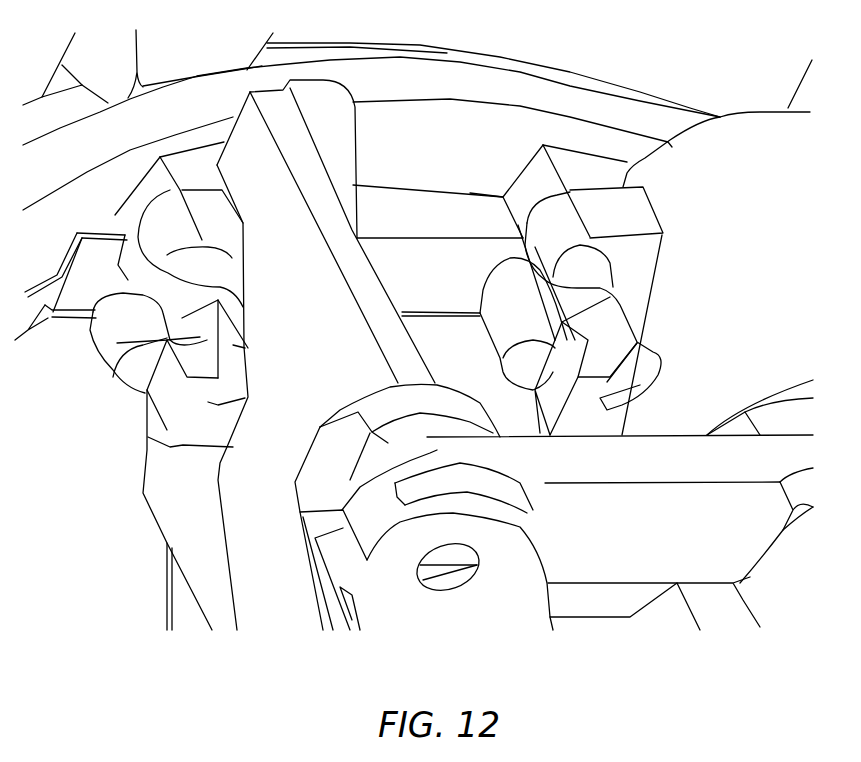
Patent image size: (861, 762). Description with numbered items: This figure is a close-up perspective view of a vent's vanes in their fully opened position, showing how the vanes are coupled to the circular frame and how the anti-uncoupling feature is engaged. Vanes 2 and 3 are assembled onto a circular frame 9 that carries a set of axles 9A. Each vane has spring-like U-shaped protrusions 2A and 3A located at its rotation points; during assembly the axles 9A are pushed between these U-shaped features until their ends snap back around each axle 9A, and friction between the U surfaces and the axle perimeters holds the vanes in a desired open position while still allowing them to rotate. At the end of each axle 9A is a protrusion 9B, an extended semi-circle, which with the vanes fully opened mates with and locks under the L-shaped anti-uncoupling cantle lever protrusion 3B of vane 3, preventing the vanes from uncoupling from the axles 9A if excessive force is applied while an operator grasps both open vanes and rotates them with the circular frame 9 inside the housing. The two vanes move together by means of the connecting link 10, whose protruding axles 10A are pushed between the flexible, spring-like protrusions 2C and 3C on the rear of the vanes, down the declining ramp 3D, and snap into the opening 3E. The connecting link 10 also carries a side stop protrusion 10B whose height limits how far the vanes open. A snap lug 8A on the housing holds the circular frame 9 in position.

The vane 2 is at (582, 141).
The protrusion 2A is at (532, 290).
The protrusion 2C is at (760, 481).
The vane 3 is at (289, 359).
The protrusion 3A is at (166, 267).
The protrusion 3B is at (182, 373).
The protrusion 3C is at (436, 507).
The declining ramp 3D is at (341, 521).
The opening 3E is at (443, 592).
The snap lug 8A is at (371, 120).
The circular frame 9 is at (386, 159).
The axle 9A is at (118, 227).
The protrusion 9B is at (245, 348).
The connecting link 10 is at (620, 531).
The protruding axle 10A is at (455, 548).
The side stop protrusion 10B is at (625, 606).